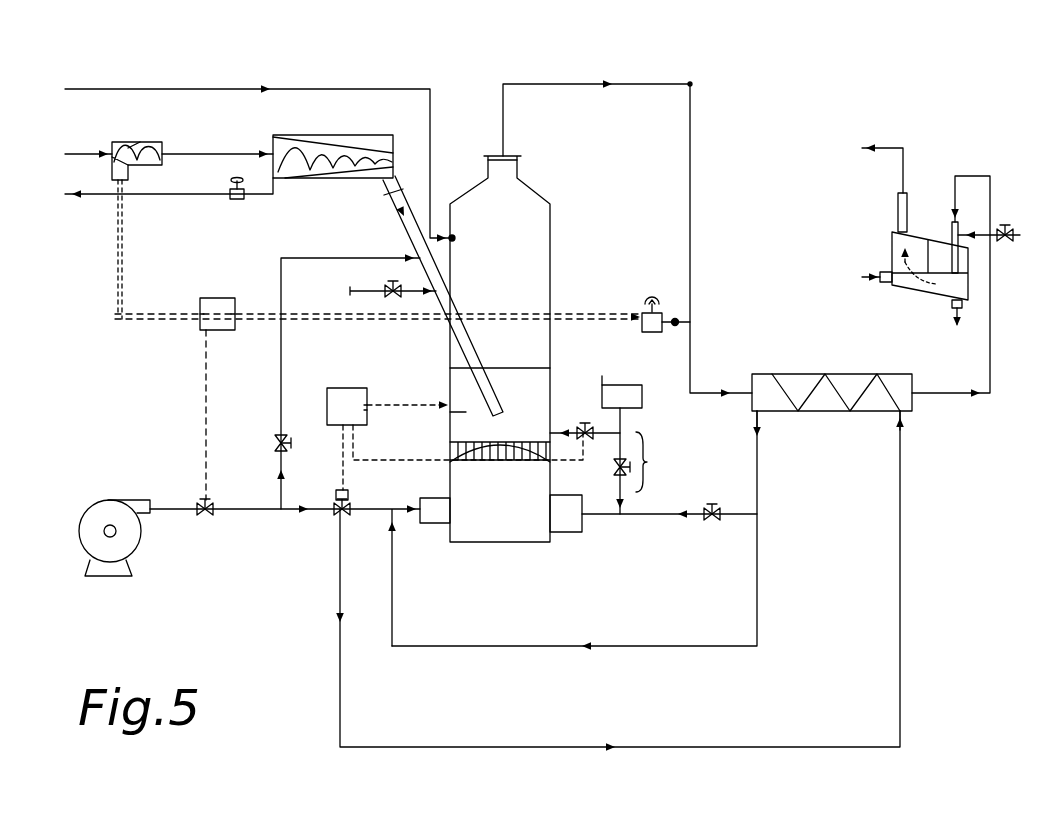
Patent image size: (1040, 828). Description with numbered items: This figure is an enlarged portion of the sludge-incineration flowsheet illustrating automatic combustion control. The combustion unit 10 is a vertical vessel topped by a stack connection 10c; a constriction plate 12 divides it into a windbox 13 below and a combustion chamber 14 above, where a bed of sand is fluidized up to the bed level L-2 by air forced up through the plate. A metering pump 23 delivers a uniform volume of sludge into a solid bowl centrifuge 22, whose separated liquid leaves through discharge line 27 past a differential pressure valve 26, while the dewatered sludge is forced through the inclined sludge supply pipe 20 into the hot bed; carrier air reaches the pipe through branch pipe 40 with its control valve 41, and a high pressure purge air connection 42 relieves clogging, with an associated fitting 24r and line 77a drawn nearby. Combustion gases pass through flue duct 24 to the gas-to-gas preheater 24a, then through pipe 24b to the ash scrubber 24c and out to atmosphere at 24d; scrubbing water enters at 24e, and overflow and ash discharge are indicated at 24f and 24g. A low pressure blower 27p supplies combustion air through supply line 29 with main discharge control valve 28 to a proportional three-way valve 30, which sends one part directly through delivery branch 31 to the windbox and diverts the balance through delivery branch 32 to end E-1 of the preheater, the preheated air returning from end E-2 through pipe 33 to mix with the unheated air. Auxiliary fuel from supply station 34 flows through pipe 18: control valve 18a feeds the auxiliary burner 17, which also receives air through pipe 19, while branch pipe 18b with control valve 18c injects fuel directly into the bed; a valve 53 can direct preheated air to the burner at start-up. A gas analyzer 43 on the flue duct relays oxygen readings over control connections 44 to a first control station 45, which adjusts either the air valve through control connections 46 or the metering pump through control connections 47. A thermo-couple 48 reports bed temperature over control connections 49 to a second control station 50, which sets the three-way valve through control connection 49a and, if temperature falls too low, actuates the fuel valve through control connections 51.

The combustion unit 10 is at (556, 240).
The stack connection 10c is at (520, 165).
The constriction plate 12 is at (517, 457).
The windbox 13 is at (494, 513).
The combustion chamber 14 is at (510, 291).
The auxiliary burner 17 is at (568, 498).
The auxiliary fuel pipe 18 is at (642, 462).
The control valve 18a is at (614, 474).
The branch pipe 18b is at (604, 428).
The control valve 18c is at (568, 420).
The combustion air pipe 19 is at (594, 516).
The sludge supply pipe 20 is at (443, 282).
The centrifuge 22 is at (356, 140).
The metering pump 23 is at (140, 146).
The flue duct 24 is at (690, 197).
The preheater 24a is at (842, 374).
The pipe 24b is at (942, 390).
The ash scrubber 24c is at (888, 252).
The atmospheric release 24d is at (896, 148).
The scrubbing water supply 24e is at (1010, 228).
The overflow means 24f is at (860, 282).
The ash discharge means 24g is at (952, 308).
The valve line 24r is at (396, 300).
The differential pressure valve 26 is at (228, 191).
The discharge line 27 is at (264, 197).
The pump 27p is at (140, 544).
The main discharge control valve 28 is at (199, 514).
The supply line 29 is at (250, 517).
The proportional three-way valve 30 is at (336, 516).
The delivery branch 31 is at (372, 506).
The delivery branch 32 is at (338, 616).
The pipe 33 is at (657, 630).
The supply station 34 is at (642, 392).
The branch pipe 40 is at (313, 258).
The control valve 41 is at (291, 448).
The purge air connection 42 is at (368, 287).
The gas analyzer 43 is at (652, 336).
The control connections 44 is at (298, 316).
The first control station 45 is at (226, 298).
The control connections 46 is at (206, 436).
The control connections 47 is at (104, 296).
The thermo-couple 48 is at (460, 418).
The control connections 49 is at (386, 406).
The control connection 49a is at (341, 470).
The second control station 50 is at (362, 392).
The control connections 51 is at (412, 456).
The valve 53 is at (720, 518).
The line 77a is at (308, 89).
The heat exchanger end E-1 is at (912, 414).
The heat exchanger end E-2 is at (748, 378).
The fluidized bed level L-2 is at (525, 355).